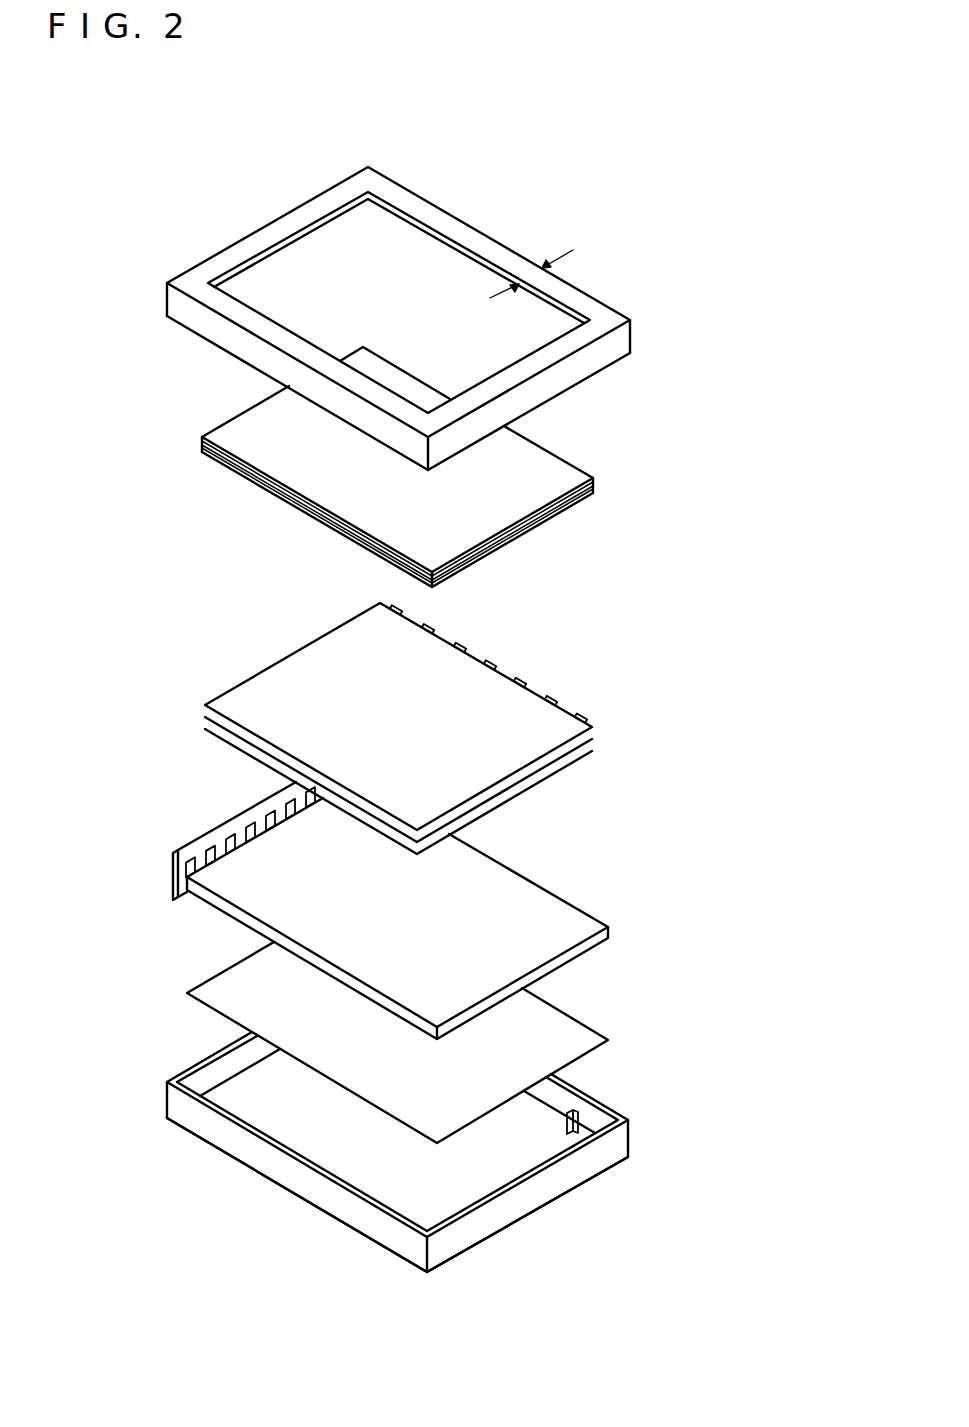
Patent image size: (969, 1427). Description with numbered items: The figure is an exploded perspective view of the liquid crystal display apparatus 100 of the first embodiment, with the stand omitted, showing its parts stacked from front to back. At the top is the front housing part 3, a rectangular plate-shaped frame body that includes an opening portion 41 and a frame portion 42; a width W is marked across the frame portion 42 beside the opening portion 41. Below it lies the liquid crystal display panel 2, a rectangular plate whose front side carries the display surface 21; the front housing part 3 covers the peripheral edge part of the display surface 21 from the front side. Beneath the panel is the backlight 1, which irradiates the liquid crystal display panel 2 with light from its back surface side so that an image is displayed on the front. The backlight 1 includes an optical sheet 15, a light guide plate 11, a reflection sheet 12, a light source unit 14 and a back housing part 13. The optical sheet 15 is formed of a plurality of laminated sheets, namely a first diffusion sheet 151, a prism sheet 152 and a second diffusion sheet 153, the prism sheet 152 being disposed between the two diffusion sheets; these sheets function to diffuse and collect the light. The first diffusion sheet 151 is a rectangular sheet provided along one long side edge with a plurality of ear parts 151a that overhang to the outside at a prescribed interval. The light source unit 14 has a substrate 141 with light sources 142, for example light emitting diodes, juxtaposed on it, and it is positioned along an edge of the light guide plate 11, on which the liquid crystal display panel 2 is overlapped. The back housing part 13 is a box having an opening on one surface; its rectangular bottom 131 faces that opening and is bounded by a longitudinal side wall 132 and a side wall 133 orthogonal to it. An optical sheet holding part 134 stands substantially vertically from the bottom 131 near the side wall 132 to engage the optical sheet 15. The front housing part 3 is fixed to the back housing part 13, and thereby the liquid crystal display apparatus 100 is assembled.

The liquid crystal display apparatus 100 is at (684, 118).
The backlight 1 is at (72, 597).
The liquid crystal display panel 2 is at (192, 438).
The display surface 21 is at (567, 472).
The front housing part 3 is at (167, 297).
The opening portion 41 is at (458, 249).
The frame portion 42 is at (403, 200).
The width of frame W is at (531, 261).
The light guide plate 11 is at (548, 903).
The reflection sheet 12 is at (550, 1022).
The back housing part 13 is at (630, 1137).
The bottom 131 is at (273, 1118).
The side wall 132 is at (603, 1101).
The side wall 133 is at (520, 1203).
The optical sheet holding part 134 is at (575, 1135).
The light source unit 14 is at (208, 825).
The substrate 141 is at (173, 856).
The light source 142 is at (290, 790).
The optical sheet 15 is at (678, 717).
The first diffusion sheet 151 is at (543, 743).
The ear part 151a is at (577, 717).
The prism sheet 152 is at (540, 770).
The second diffusion sheet 153 is at (545, 793).